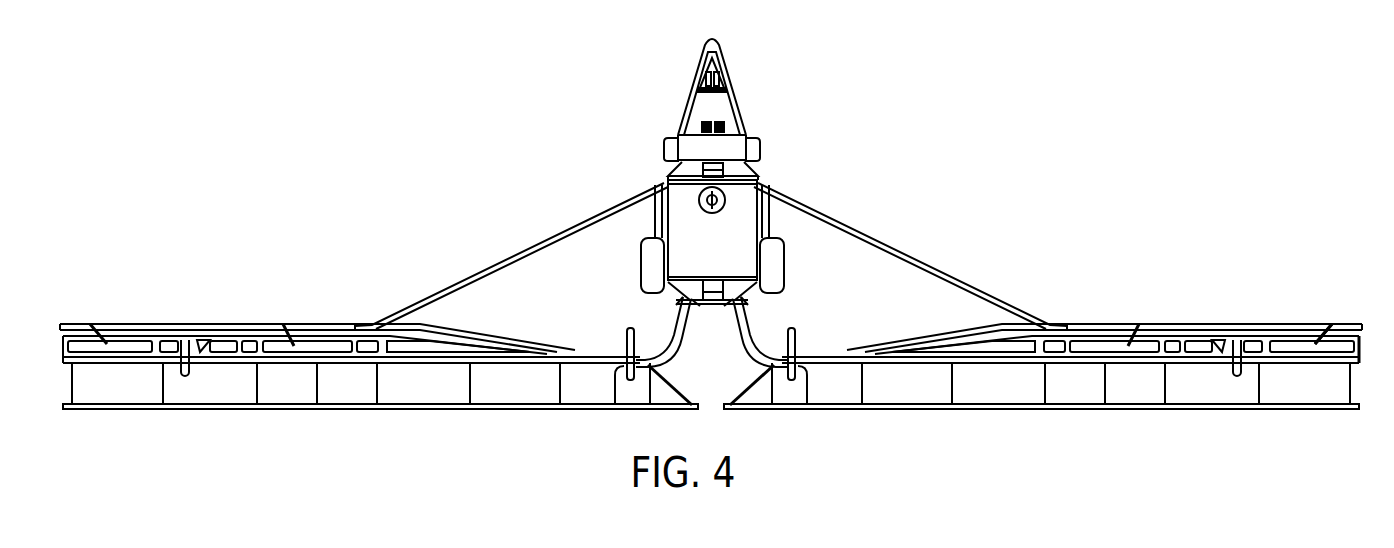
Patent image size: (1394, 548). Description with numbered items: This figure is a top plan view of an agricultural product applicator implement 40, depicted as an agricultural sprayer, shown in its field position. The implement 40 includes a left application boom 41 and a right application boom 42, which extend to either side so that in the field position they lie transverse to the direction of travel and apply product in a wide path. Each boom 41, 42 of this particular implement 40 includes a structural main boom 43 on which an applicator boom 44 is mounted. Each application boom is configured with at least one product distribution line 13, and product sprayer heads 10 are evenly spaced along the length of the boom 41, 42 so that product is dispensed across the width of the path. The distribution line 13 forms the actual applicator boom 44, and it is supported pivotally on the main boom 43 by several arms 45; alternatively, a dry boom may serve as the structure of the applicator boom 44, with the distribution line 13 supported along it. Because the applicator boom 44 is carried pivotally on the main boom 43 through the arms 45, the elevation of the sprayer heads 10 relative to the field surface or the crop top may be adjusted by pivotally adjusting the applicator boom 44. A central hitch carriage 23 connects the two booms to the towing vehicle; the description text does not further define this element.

The sprayer head 10 is at (790, 424).
The product distribution line 13 is at (674, 322).
The hitch carriage 23 is at (678, 210).
The implement 40 is at (951, 110).
The left application boom 41 is at (240, 258).
The right application boom 42 is at (1222, 292).
The structural main boom 43 is at (1362, 352).
The applicator boom 44 is at (1360, 411).
The arm 45 is at (1256, 395).